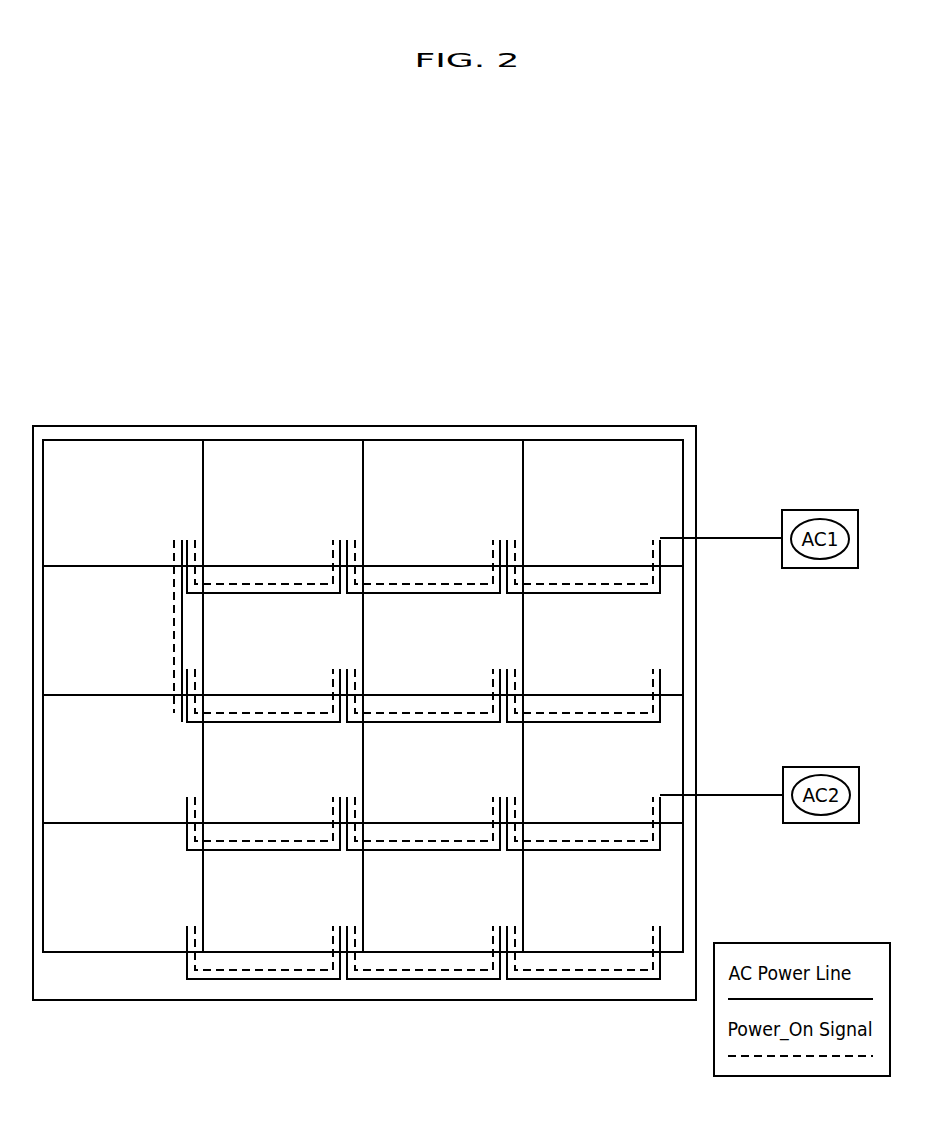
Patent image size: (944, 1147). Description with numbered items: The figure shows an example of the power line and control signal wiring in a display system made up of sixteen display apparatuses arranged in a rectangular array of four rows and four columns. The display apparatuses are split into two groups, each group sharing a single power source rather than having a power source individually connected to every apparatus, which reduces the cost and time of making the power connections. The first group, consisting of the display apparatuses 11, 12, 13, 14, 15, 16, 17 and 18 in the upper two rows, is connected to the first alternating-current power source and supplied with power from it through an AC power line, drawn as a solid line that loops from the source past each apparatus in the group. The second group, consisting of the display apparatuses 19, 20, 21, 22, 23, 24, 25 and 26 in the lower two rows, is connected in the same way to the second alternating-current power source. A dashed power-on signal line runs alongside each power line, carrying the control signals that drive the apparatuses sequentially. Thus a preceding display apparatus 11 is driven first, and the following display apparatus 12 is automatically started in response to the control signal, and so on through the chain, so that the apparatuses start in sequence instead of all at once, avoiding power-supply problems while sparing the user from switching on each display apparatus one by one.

The display apparatus 11 is at (603, 503).
The display apparatus 12 is at (443, 503).
The display apparatus 13 is at (283, 503).
The display apparatus 14 is at (123, 503).
The display apparatus 15 is at (123, 630).
The display apparatus 16 is at (283, 630).
The display apparatus 17 is at (443, 630).
The display apparatus 18 is at (603, 630).
The display apparatus 19 is at (603, 759).
The display apparatus 20 is at (443, 759).
The display apparatus 21 is at (283, 759).
The display apparatus 22 is at (123, 759).
The display apparatus 23 is at (123, 887).
The display apparatus 24 is at (283, 887).
The display apparatus 25 is at (443, 887).
The display apparatus 26 is at (603, 887).